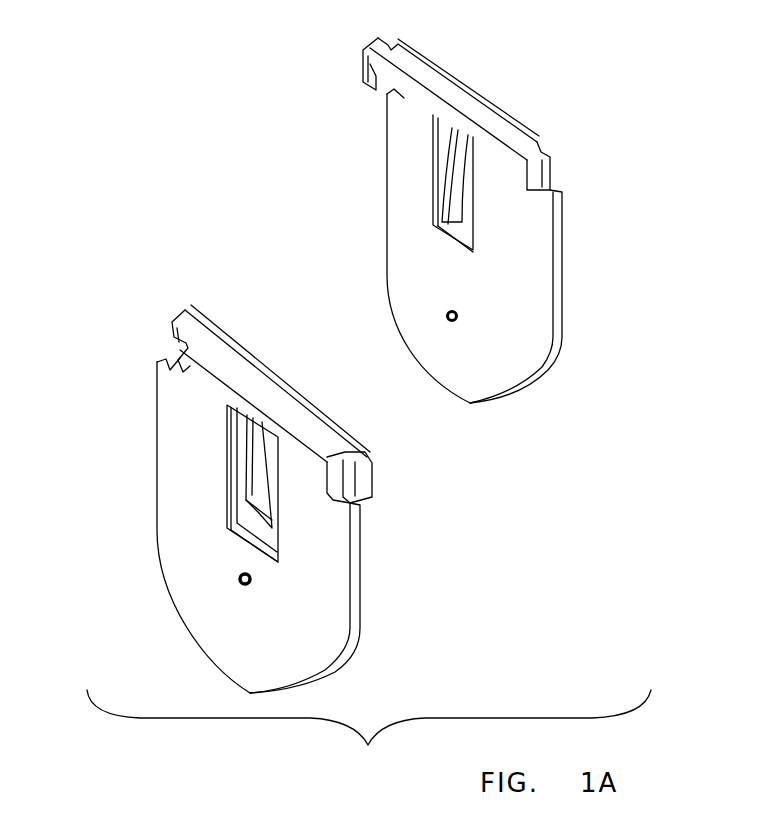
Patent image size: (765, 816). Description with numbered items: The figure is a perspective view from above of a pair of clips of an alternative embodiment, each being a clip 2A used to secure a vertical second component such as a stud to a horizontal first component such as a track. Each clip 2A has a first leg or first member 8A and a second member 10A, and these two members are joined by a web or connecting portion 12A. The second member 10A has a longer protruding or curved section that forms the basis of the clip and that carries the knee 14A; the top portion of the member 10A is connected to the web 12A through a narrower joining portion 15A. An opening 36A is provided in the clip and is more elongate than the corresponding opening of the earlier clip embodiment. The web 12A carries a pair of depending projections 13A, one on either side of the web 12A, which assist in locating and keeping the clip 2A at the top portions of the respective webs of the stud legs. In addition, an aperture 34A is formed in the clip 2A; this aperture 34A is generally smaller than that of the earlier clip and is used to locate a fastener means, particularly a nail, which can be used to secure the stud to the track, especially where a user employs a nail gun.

The clip 2A is at (262, 58).
The first member 8A is at (357, 642).
The second member 10A is at (449, 146).
The web 12A is at (421, 65).
The depending projections 13A is at (363, 68).
The knee 14A is at (240, 497).
The joining portion 15A is at (445, 118).
The aperture 34A is at (444, 313).
The opening 36A is at (473, 250).